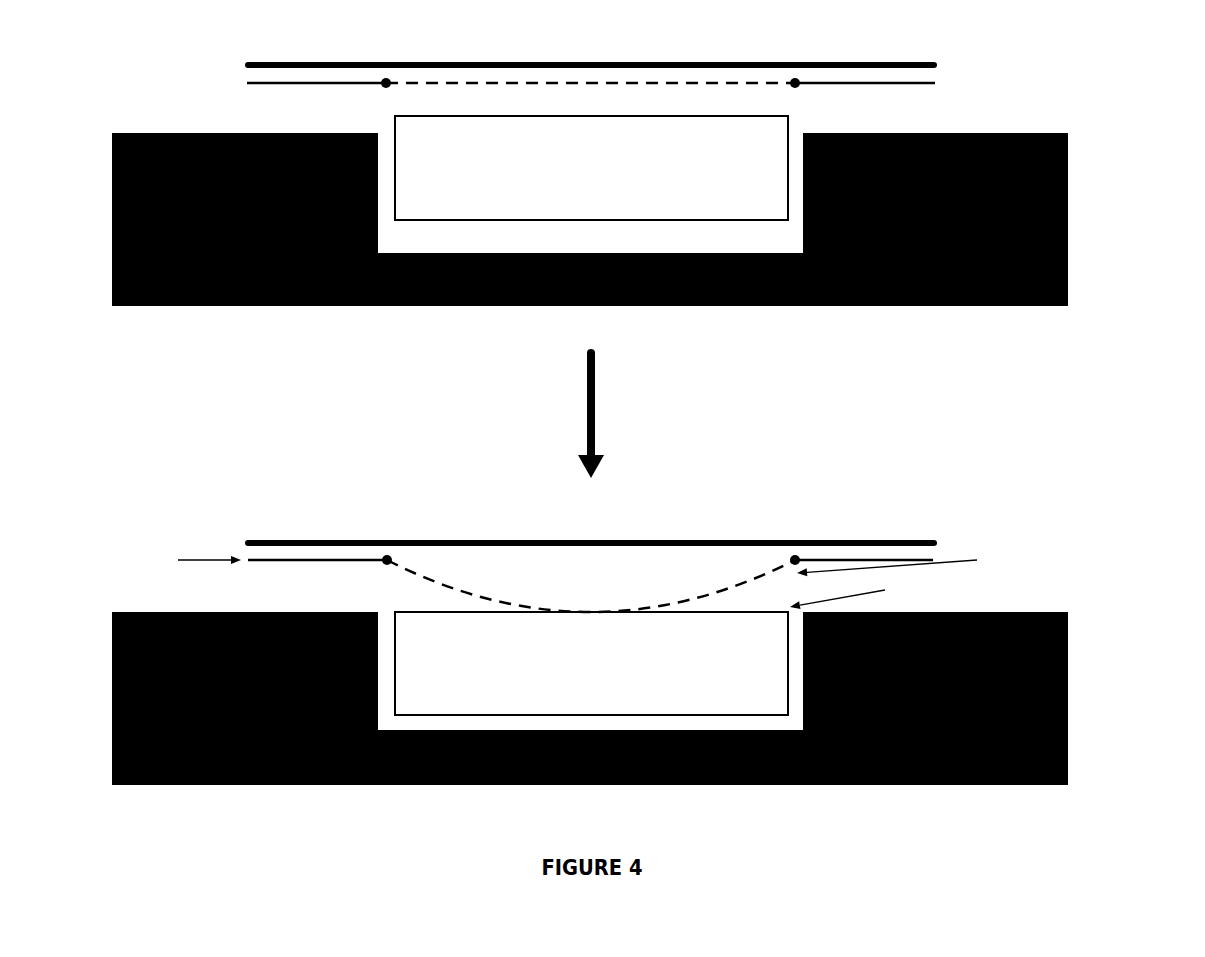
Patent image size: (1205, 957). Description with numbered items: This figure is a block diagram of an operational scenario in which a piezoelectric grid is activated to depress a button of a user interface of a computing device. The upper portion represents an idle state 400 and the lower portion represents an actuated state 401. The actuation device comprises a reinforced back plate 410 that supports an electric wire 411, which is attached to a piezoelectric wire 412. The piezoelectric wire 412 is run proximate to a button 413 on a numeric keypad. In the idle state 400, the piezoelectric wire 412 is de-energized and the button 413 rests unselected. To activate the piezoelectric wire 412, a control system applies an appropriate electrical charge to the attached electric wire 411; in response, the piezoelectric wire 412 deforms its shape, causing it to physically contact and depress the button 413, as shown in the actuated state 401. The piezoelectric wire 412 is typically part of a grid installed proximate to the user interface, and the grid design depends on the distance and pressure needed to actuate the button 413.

The idle state 400 is at (88, 75).
The actuated state 401 is at (104, 499).
The reinforced back plate 410 is at (247, 65).
The electric wire 411 is at (250, 84).
The piezoelectric wire 412 is at (778, 84).
The button 413 is at (391, 120).